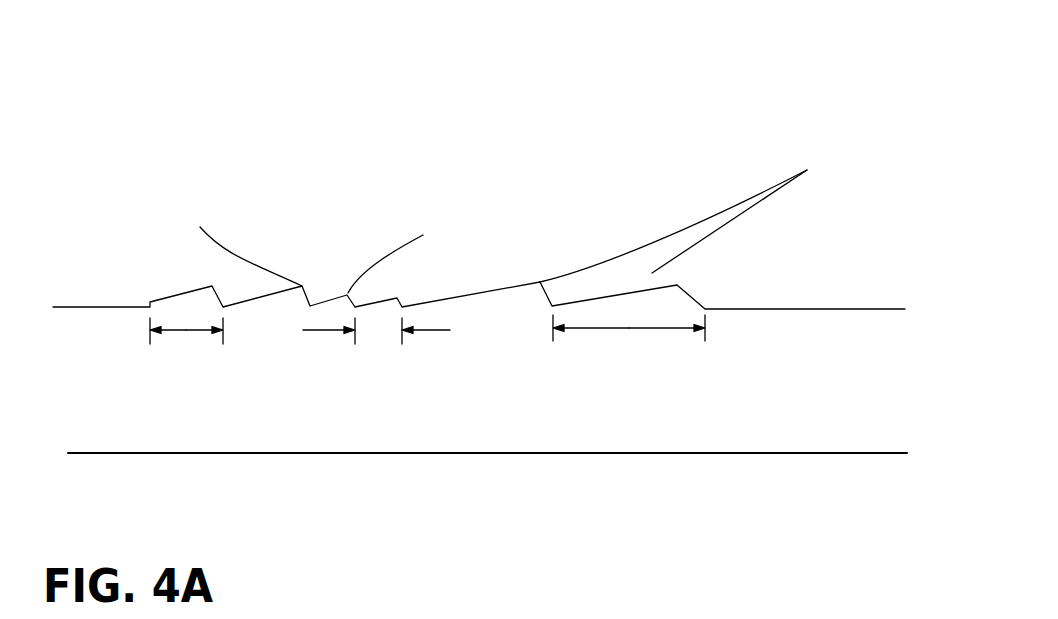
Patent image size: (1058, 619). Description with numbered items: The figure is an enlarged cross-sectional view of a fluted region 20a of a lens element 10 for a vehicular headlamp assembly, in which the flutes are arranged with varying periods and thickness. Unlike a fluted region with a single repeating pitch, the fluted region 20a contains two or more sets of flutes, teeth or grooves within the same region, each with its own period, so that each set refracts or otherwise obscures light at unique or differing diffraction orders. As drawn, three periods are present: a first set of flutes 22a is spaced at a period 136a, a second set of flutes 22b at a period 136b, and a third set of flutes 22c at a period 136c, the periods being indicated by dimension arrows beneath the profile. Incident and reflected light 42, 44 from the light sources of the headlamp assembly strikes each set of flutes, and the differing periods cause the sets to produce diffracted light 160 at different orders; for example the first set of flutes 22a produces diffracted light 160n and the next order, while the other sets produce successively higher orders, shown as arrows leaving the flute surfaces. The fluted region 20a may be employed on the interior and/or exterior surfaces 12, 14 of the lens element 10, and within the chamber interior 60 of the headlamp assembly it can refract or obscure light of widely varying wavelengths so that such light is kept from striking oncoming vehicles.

The lens element 10 is at (761, 400).
The interior surface 12 is at (875, 305).
The exterior surface 14 is at (765, 455).
The fluted region 20a is at (690, 137).
The first set of flutes 22a is at (212, 286).
The second set of flutes 22b is at (397, 297).
The third set of flutes 22c is at (677, 285).
The incident light 42 is at (153, 288).
The reflected light 44 is at (345, 226).
The chamber interior 60 is at (724, 185).
The first period 136a is at (183, 331).
The second period 136b is at (325, 331).
The third period 136c is at (610, 329).
The diffracted light 160 is at (552, 231).
The diffracted light of order n 160n is at (170, 287).